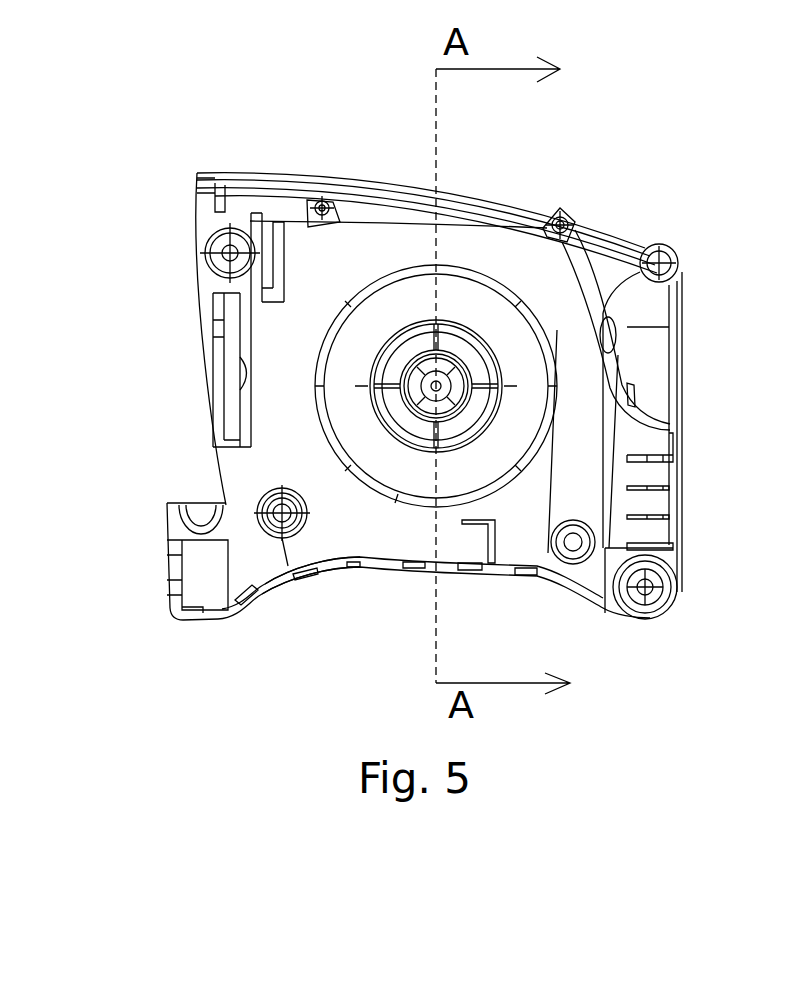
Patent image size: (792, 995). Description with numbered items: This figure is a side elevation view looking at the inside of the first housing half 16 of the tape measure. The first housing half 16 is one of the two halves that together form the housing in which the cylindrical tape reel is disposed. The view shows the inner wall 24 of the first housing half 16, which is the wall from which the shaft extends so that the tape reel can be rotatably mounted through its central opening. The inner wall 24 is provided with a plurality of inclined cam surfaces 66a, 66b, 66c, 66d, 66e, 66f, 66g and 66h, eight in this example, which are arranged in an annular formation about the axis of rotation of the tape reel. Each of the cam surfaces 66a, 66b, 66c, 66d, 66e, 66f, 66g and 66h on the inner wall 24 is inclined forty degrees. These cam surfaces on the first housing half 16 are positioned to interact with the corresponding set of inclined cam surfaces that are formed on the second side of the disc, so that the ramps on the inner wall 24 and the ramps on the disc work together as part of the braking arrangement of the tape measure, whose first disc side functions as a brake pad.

The inner wall 24 is at (327, 248).
The first housing half 16 is at (647, 613).
The inclined cam surface 66a is at (483, 493).
The inclined cam surface 66b is at (555, 418).
The inclined cam surface 66c is at (545, 324).
The inclined cam surface 66d is at (470, 267).
The inclined cam surface 66e is at (387, 267).
The inclined cam surface 66f is at (330, 336).
The inclined cam surface 66g is at (335, 444).
The inclined cam surface 66h is at (398, 495).